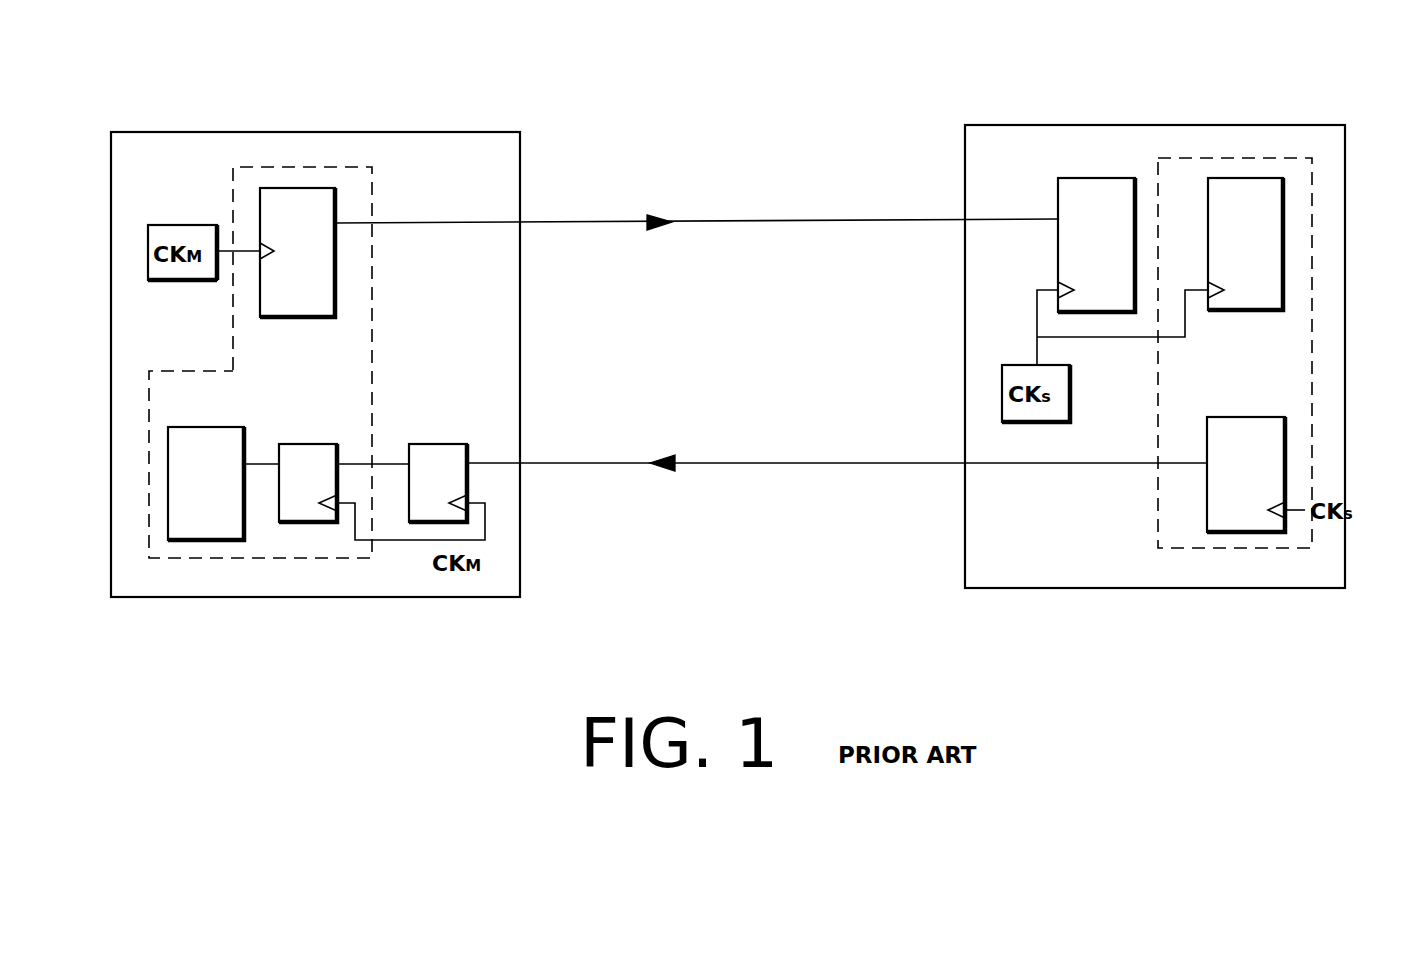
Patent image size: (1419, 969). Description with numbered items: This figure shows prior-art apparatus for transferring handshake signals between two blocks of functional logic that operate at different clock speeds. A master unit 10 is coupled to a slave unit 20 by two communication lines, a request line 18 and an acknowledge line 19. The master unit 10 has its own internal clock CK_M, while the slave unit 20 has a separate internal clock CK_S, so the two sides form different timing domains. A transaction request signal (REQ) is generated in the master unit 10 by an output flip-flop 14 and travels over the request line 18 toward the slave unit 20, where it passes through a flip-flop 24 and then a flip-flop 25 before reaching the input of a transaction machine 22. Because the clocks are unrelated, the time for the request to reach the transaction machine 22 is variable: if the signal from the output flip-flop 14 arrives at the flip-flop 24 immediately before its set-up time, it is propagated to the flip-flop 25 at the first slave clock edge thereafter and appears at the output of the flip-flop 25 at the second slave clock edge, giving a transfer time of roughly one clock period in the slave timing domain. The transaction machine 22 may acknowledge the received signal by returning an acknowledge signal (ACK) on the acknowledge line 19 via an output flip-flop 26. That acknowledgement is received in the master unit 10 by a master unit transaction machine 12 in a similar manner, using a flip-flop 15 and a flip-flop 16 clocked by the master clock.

The master unit 10 is at (111, 187).
The master unit transaction machine 12 is at (190, 369).
The output flip-flop 14 is at (280, 317).
The flip-flop 15 is at (422, 443).
The flip-flop 16 is at (295, 443).
The request line 18 is at (800, 222).
The acknowledge line 19 is at (798, 463).
The slave unit 20 is at (1345, 187).
The transaction machine 22 is at (1158, 513).
The flip-flop 24 is at (1077, 177).
The flip-flop 25 is at (1223, 312).
The output flip-flop 26 is at (1223, 417).